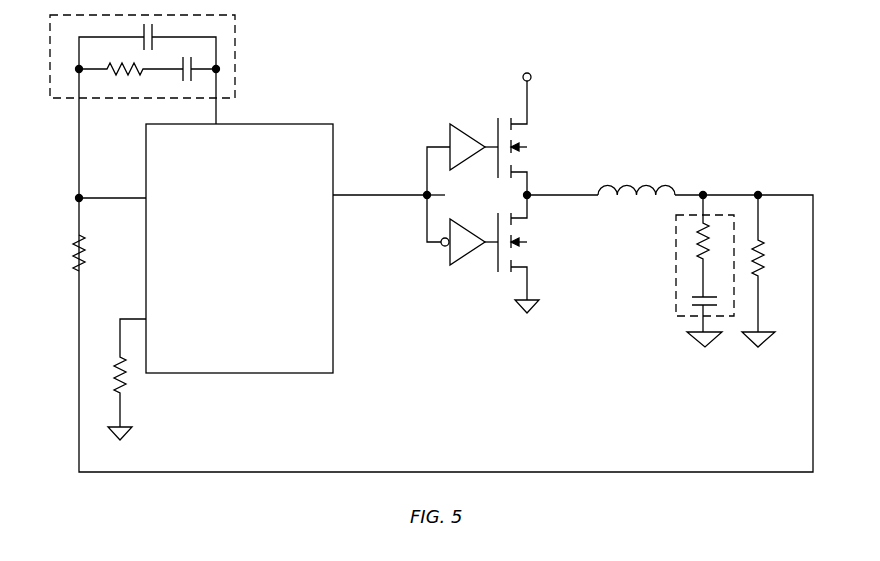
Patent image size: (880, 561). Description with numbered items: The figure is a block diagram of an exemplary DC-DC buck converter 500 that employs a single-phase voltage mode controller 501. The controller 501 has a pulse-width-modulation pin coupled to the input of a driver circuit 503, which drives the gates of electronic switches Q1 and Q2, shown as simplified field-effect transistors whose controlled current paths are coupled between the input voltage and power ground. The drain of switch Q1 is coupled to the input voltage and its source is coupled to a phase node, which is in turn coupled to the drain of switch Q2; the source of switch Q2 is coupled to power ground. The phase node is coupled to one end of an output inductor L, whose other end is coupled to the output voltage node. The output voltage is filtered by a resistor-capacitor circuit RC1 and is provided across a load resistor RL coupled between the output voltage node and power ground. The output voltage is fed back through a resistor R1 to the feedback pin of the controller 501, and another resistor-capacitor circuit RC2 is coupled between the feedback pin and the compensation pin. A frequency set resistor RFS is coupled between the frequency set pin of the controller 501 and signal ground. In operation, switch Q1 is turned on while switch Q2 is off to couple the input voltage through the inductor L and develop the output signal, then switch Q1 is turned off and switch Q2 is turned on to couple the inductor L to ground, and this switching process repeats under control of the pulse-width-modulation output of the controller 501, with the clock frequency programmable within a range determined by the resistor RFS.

The DC-DC buck converter 500 is at (690, 94).
The single-phase voltage mode controller 501 is at (333, 353).
The driver circuit 503 is at (408, 108).
The resistor-capacitor circuit RC2 is at (235, 43).
The resistor R1 is at (97, 253).
The frequency set resistor RFS is at (138, 387).
The electronic switch Q1 is at (533, 120).
The electronic switch Q2 is at (533, 269).
The output inductor L is at (632, 187).
The resistor-capacitor circuit RC1 is at (676, 266).
The load resistor RL is at (768, 271).